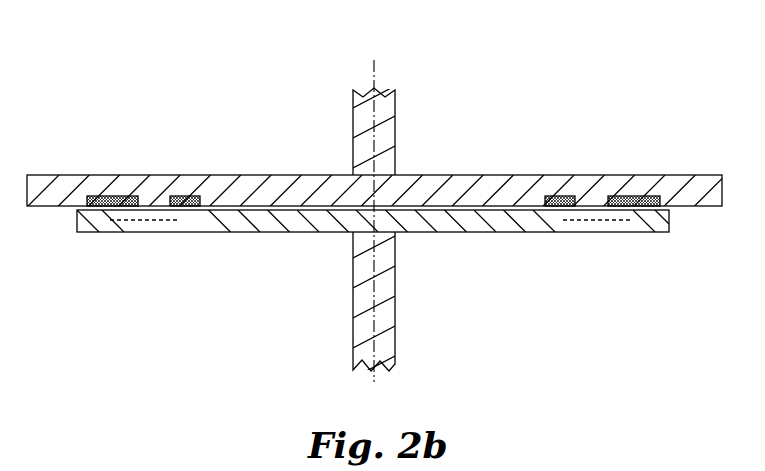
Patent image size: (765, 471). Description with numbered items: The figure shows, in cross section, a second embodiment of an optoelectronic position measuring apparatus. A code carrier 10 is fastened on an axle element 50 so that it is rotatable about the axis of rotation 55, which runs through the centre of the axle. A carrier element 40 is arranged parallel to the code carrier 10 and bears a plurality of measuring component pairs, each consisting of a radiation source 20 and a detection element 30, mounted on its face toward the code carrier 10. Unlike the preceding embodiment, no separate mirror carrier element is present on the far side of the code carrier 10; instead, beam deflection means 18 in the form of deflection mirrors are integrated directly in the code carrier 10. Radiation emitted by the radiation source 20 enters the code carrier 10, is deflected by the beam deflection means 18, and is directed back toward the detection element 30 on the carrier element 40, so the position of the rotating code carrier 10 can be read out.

The code carrier 10 is at (527, 222).
The beam deflection means 18 is at (187, 210).
The radiation source 20 is at (187, 195).
The detection element 30 is at (110, 195).
The carrier element 40 is at (468, 176).
The axle element 50 is at (395, 120).
The axis of rotation 55 is at (374, 84).